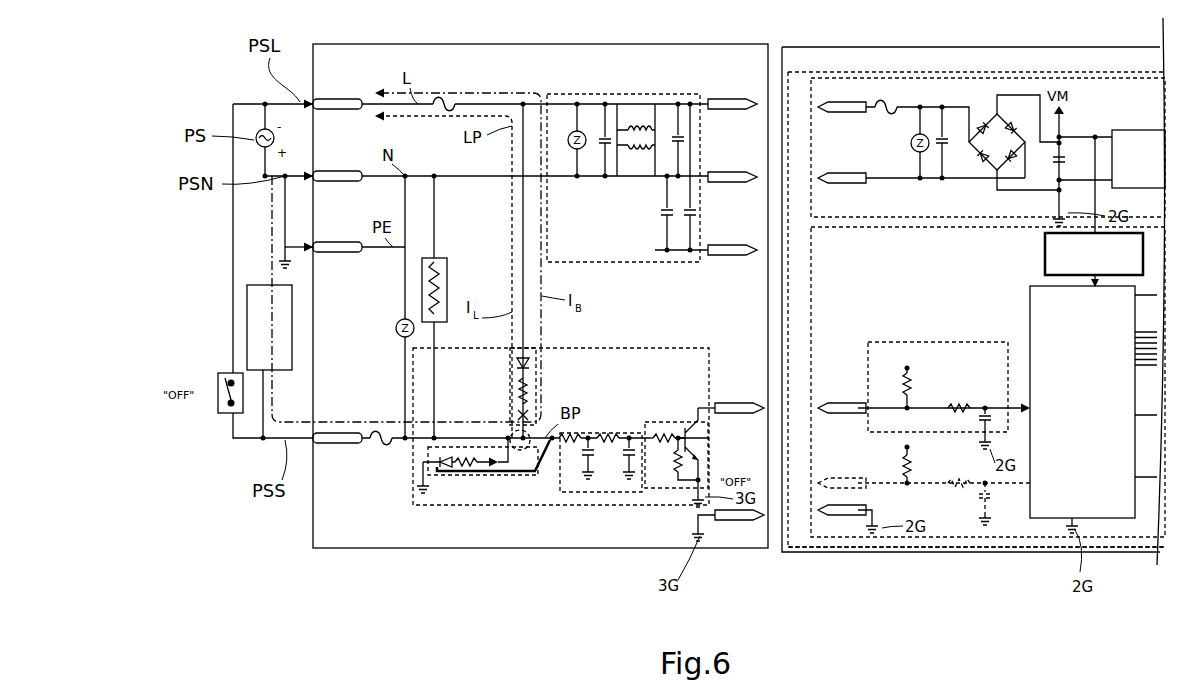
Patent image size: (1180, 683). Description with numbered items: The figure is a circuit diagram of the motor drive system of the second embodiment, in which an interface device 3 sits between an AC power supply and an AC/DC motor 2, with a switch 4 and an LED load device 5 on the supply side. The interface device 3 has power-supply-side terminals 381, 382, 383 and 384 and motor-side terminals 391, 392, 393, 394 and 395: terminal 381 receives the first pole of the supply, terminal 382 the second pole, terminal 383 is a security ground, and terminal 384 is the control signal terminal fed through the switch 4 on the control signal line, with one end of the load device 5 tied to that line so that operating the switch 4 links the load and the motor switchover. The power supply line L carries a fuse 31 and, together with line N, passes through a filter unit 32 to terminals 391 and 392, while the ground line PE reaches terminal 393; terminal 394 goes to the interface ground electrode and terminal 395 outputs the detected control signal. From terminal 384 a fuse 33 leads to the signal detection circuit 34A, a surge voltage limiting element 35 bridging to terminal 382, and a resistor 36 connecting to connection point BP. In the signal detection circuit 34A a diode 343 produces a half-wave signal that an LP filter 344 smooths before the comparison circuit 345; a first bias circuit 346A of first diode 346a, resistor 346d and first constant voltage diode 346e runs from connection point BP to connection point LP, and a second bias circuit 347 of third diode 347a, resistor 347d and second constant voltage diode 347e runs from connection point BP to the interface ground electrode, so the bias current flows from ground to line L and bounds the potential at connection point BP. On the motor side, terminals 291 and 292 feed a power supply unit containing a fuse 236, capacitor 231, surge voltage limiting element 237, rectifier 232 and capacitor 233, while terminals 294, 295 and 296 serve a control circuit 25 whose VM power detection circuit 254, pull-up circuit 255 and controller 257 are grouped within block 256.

The AC/DC motor 2 is at (1015, 46).
The interface device 3 is at (592, 46).
The switch 4 is at (218, 380).
The load device 5 is at (247, 300).
The control circuit 25 is at (1025, 548).
The fuse 31 is at (455, 103).
The filter unit 32 is at (641, 262).
The fuse 33 is at (381, 445).
The signal detection circuit 34A is at (628, 348).
The surge voltage limiting element 35 is at (396, 328).
The resistor 36 is at (447, 288).
The capacitor 231 is at (946, 152).
The rectifier 232 is at (1003, 166).
The capacitor 233 is at (1066, 152).
The fuse 236 is at (886, 105).
The surge voltage limiting element 237 is at (911, 141).
The VM power detection circuit 254 is at (1045, 256).
The pull-up circuit 255 is at (945, 342).
The control circuit 256 is at (960, 542).
The controller 257 is at (1030, 318).
The terminal 291 is at (840, 113).
The terminal 292 is at (835, 184).
The terminal 294 is at (838, 518).
The terminal 295 is at (838, 413).
The terminal 296 is at (840, 483).
The diode 343 is at (464, 512).
The LP filter 344 is at (585, 492).
The comparison circuit 345 is at (663, 488).
The first bias circuit 346A is at (522, 271).
The first diode 346a is at (510, 414).
The resistor 346d is at (510, 390).
The first constant voltage diode 346e is at (510, 362).
The second bias circuit 347 is at (462, 512).
The third diode 347a is at (515, 487).
The resistor 347d is at (462, 470).
The second constant voltage diode 347e is at (440, 470).
The terminal 381 is at (335, 110).
The terminal 382 is at (335, 182).
The terminal 383 is at (335, 253).
The terminal 384 is at (335, 444).
The terminal 391 is at (735, 110).
The terminal 392 is at (735, 183).
The terminal 393 is at (735, 256).
The terminal 394 is at (738, 523).
The terminal 395 is at (735, 415).